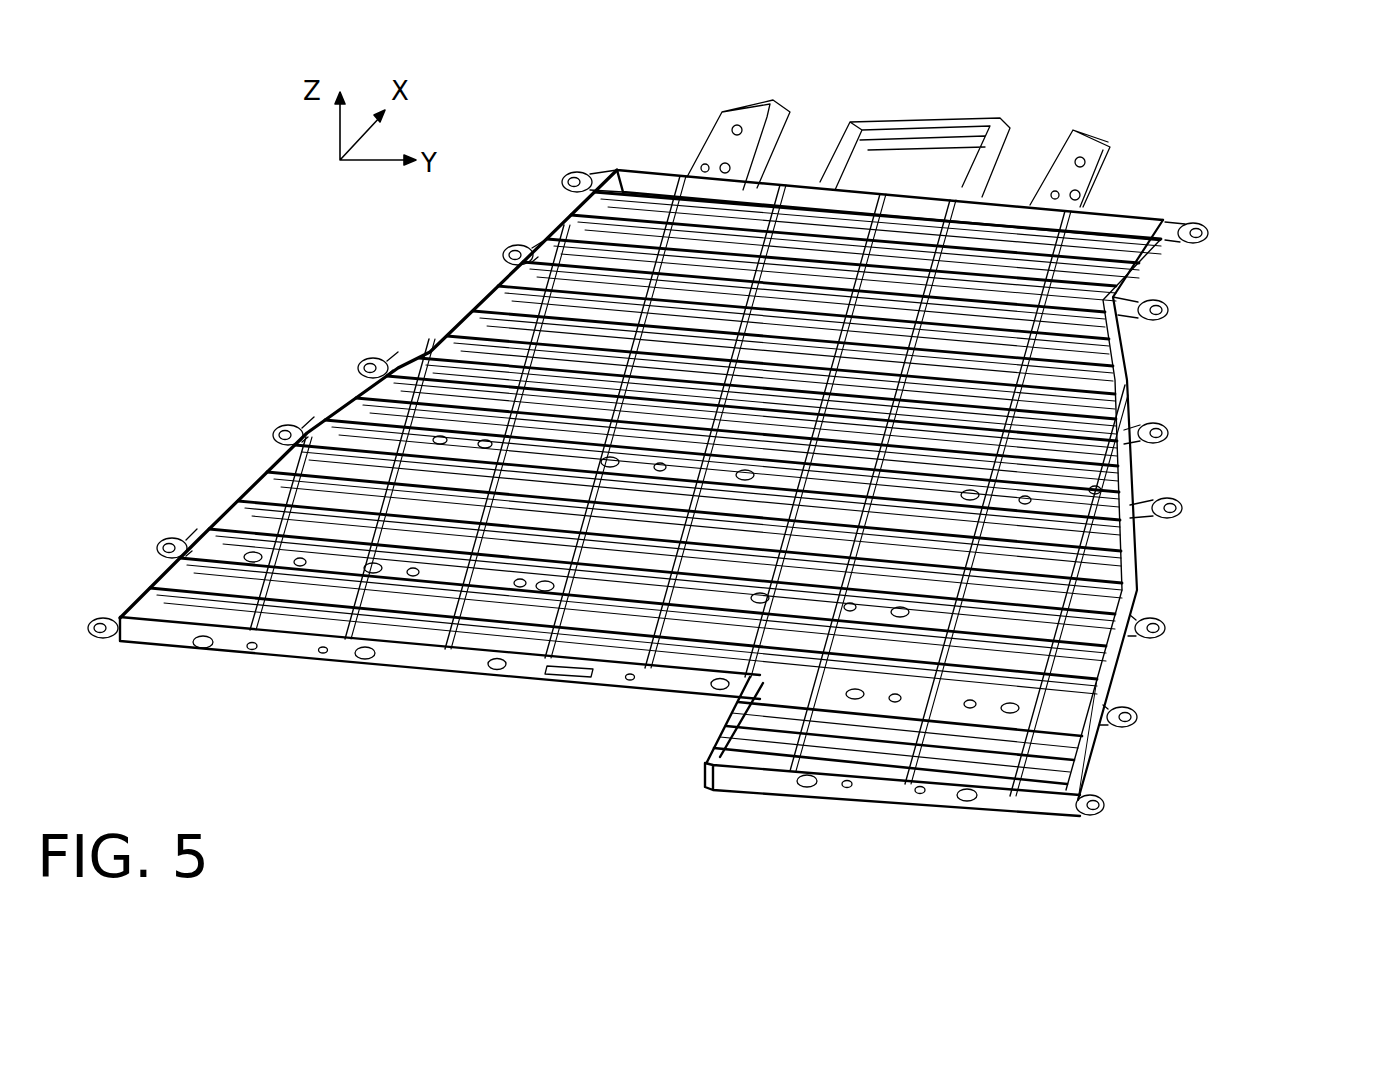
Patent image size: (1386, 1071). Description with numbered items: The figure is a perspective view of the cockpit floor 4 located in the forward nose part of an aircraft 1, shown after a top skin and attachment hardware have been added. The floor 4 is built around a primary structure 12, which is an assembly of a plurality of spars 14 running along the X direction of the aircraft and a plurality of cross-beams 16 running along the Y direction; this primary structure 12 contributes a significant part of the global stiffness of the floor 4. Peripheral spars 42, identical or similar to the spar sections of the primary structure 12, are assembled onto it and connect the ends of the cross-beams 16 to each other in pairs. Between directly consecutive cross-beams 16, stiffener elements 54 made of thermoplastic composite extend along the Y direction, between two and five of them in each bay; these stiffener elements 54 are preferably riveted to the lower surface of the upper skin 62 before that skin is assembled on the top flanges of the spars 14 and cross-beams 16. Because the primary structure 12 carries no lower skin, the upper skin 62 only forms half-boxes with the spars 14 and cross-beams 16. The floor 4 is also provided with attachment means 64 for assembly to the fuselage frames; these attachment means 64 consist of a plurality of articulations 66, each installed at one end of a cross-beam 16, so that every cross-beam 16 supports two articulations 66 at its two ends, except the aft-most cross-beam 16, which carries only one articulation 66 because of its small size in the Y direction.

The aircraft 1 is at (215, 214).
The cockpit floor 4 is at (150, 636).
The primary structure 12 is at (240, 590).
The spars 14 is at (900, 762).
The cross-beams 16 is at (294, 652).
The peripheral spars 42 is at (1140, 572).
The stiffener elements 54 is at (226, 503).
The upper skin 62 is at (308, 486).
The attachment means 64 is at (190, 308).
The articulations 66 is at (282, 430).